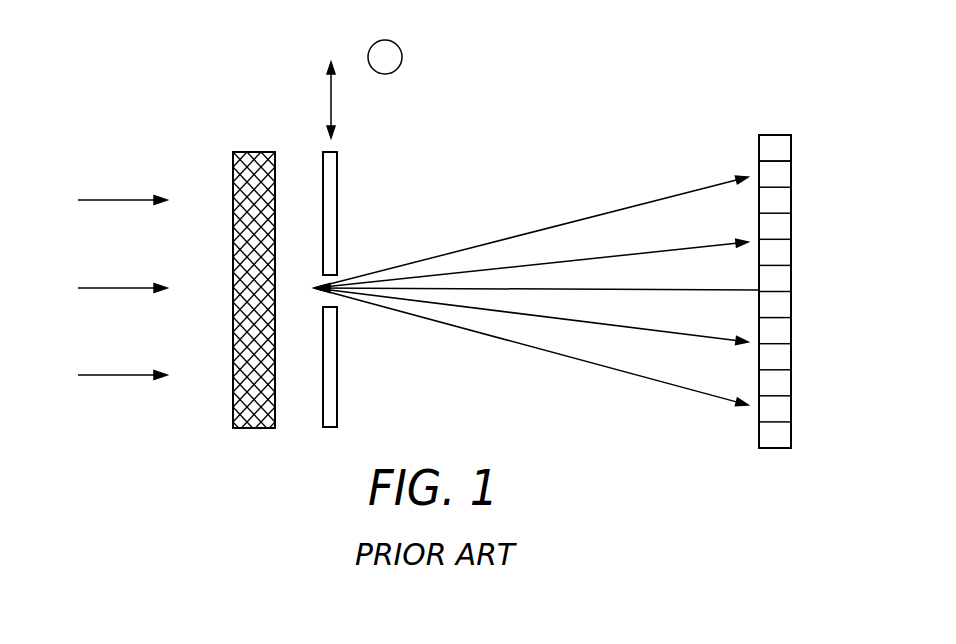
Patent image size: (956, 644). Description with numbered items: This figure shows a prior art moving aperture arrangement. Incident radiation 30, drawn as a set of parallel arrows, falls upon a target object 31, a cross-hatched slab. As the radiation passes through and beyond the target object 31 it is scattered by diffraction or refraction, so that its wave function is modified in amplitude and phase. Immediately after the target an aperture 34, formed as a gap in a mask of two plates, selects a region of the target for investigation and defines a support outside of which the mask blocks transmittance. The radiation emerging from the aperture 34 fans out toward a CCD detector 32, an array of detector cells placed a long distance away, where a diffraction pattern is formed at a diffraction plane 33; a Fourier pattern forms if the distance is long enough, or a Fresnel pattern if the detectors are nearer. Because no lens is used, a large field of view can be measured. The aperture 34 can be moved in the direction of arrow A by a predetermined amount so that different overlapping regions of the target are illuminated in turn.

The incident radiation 30 is at (98, 200).
The target object 31 is at (235, 152).
The CCD detector 32 is at (778, 135).
The diffraction plane 33 is at (748, 142).
The aperture 34 is at (337, 398).
The arrow A is at (332, 102).